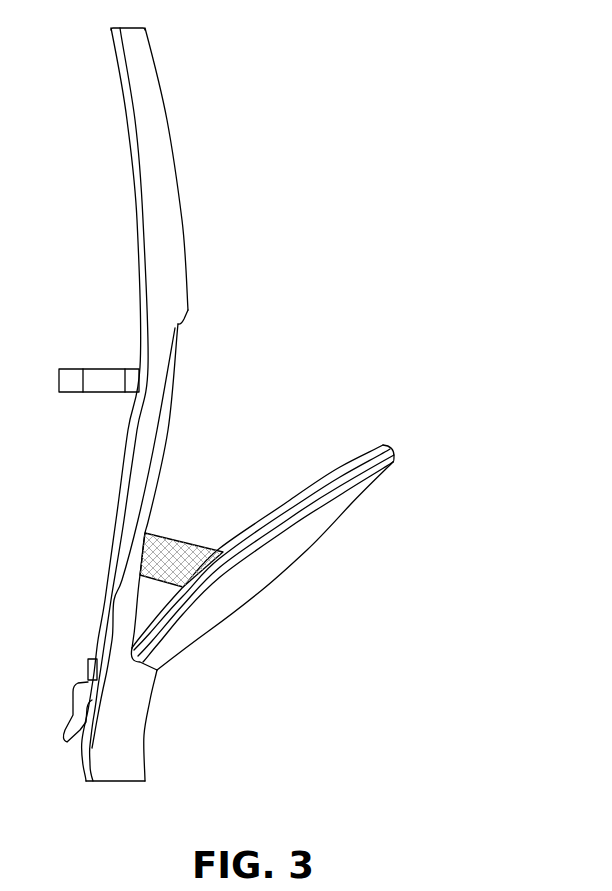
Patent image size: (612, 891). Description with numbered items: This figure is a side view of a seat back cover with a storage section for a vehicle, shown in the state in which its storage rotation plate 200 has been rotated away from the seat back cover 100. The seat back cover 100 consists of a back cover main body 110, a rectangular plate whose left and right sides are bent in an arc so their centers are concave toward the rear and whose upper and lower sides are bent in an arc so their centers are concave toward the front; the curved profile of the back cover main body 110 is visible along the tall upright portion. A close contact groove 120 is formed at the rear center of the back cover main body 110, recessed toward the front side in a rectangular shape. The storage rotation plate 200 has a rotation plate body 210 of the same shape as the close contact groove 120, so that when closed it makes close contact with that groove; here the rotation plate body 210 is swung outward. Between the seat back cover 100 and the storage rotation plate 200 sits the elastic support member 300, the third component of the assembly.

The seat back cover 100 is at (179, 404).
The back cover main body 110 is at (168, 177).
The close contact groove 120 is at (188, 320).
The storage rotation plate 200 is at (280, 557).
The rotation plate body 210 is at (347, 498).
The elastic support member 300 is at (202, 503).